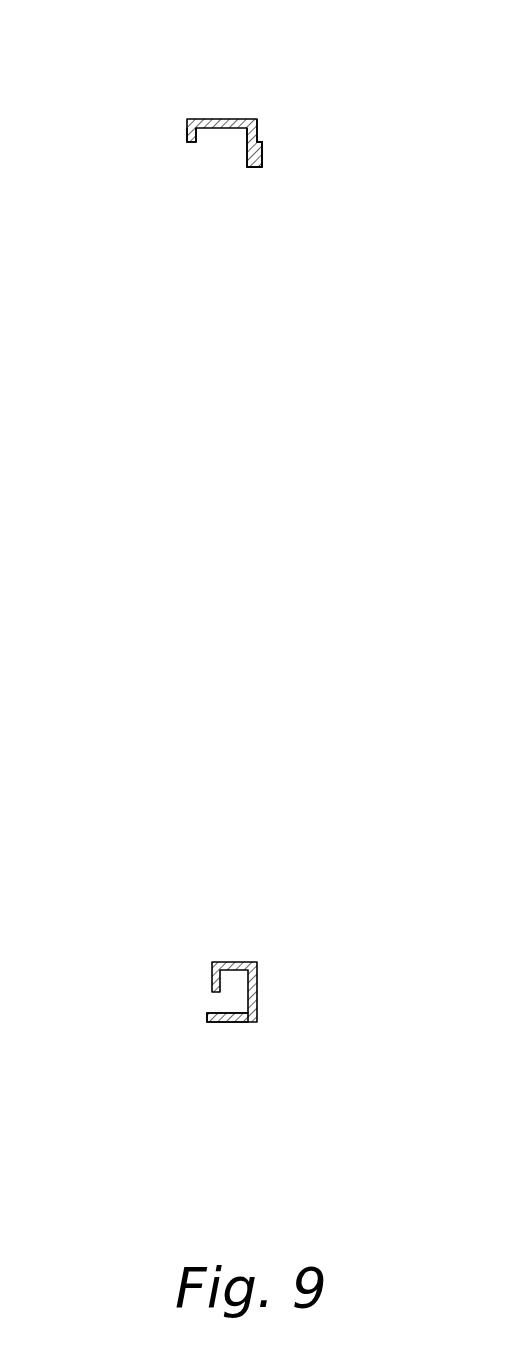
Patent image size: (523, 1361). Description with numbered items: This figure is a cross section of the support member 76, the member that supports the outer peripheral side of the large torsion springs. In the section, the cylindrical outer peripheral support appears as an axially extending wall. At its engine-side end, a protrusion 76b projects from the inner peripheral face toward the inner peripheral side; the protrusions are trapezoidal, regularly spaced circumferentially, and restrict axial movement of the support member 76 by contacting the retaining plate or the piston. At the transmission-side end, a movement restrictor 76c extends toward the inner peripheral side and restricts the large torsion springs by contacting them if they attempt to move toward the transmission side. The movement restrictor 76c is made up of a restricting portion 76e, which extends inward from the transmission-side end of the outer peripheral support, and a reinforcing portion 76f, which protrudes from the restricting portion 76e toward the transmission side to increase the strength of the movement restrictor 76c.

The support member 76 is at (258, 989).
The protrusion 76b is at (186, 135).
The movement restrictor 76c is at (265, 132).
The restricting portion 76e is at (246, 167).
The reinforcing portion 76f is at (263, 148).